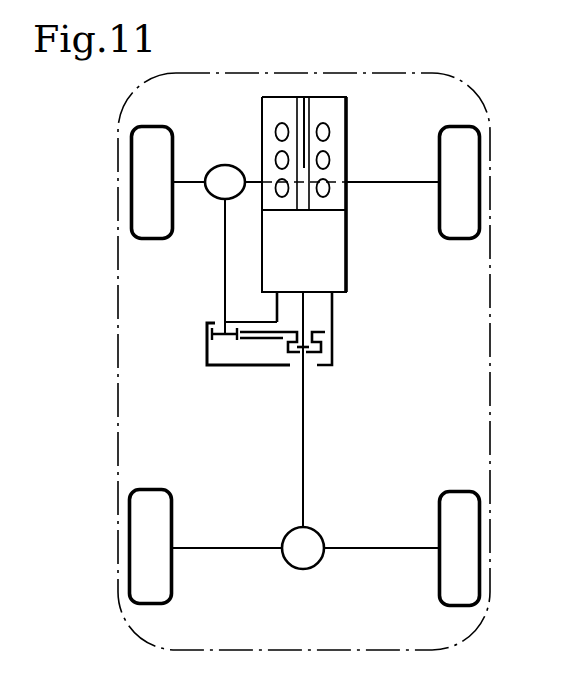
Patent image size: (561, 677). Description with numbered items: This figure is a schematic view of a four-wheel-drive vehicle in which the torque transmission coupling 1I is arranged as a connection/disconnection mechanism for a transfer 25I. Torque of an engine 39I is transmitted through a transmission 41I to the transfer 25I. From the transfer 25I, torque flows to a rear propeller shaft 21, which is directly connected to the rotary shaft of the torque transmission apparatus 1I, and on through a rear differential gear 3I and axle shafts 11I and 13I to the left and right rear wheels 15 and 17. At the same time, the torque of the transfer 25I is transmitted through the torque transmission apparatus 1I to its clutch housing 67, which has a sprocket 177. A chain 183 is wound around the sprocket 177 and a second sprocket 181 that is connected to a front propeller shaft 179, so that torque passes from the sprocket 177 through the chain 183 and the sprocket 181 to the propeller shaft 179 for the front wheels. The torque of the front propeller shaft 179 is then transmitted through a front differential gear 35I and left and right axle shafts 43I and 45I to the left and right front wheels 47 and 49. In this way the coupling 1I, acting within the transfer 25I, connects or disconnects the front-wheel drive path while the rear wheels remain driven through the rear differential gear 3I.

The torque transmission coupling 1I is at (322, 362).
The rear differential gear 3I is at (314, 532).
The axle shaft 11I is at (222, 547).
The axle shaft 13I is at (393, 547).
The left rear wheel 15 is at (150, 487).
The right rear wheel 17 is at (462, 489).
The rear propeller shaft 21 is at (305, 449).
The transfer 25I is at (340, 349).
The front differential gear 35I is at (228, 160).
The engine 39I is at (338, 104).
The transmission 41I is at (334, 250).
The axle shaft 43I is at (190, 184).
The axle shaft 45I is at (390, 184).
The left front wheel 47 is at (150, 242).
The right front wheel 49 is at (460, 242).
The clutch housing 67 is at (334, 341).
The sprocket 177 is at (328, 337).
The front propeller shaft 179 is at (224, 303).
The sprocket 181 is at (206, 338).
The chain 183 is at (253, 341).